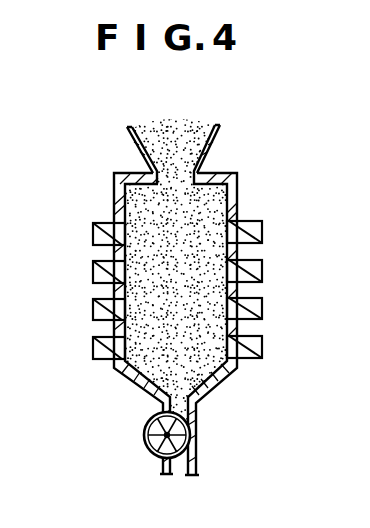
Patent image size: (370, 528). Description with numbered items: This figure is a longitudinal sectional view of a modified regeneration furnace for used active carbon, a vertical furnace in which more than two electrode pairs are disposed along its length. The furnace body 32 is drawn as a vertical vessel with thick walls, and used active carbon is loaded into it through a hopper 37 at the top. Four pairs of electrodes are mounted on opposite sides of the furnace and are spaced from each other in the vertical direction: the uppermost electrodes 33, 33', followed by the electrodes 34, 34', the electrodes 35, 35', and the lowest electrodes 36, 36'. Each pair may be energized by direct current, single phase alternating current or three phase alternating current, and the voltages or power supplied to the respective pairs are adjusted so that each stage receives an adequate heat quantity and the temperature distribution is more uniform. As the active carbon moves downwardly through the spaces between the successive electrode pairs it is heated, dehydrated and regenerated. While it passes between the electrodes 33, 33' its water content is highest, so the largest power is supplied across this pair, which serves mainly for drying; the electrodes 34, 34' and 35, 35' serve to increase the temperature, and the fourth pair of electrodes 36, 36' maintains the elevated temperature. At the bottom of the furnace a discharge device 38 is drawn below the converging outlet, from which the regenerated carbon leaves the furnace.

The vessel 32 is at (238, 200).
The hopper 37 is at (221, 127).
The electrode 33 is at (272, 229).
The electrode 34 is at (272, 269).
The electrode 35 is at (272, 308).
The electrode 36 is at (272, 346).
The electrode 33' is at (81, 229).
The electrode 34' is at (81, 268).
The electrode 35' is at (81, 308).
The electrode 36' is at (81, 346).
The rotary valve 38 is at (144, 441).